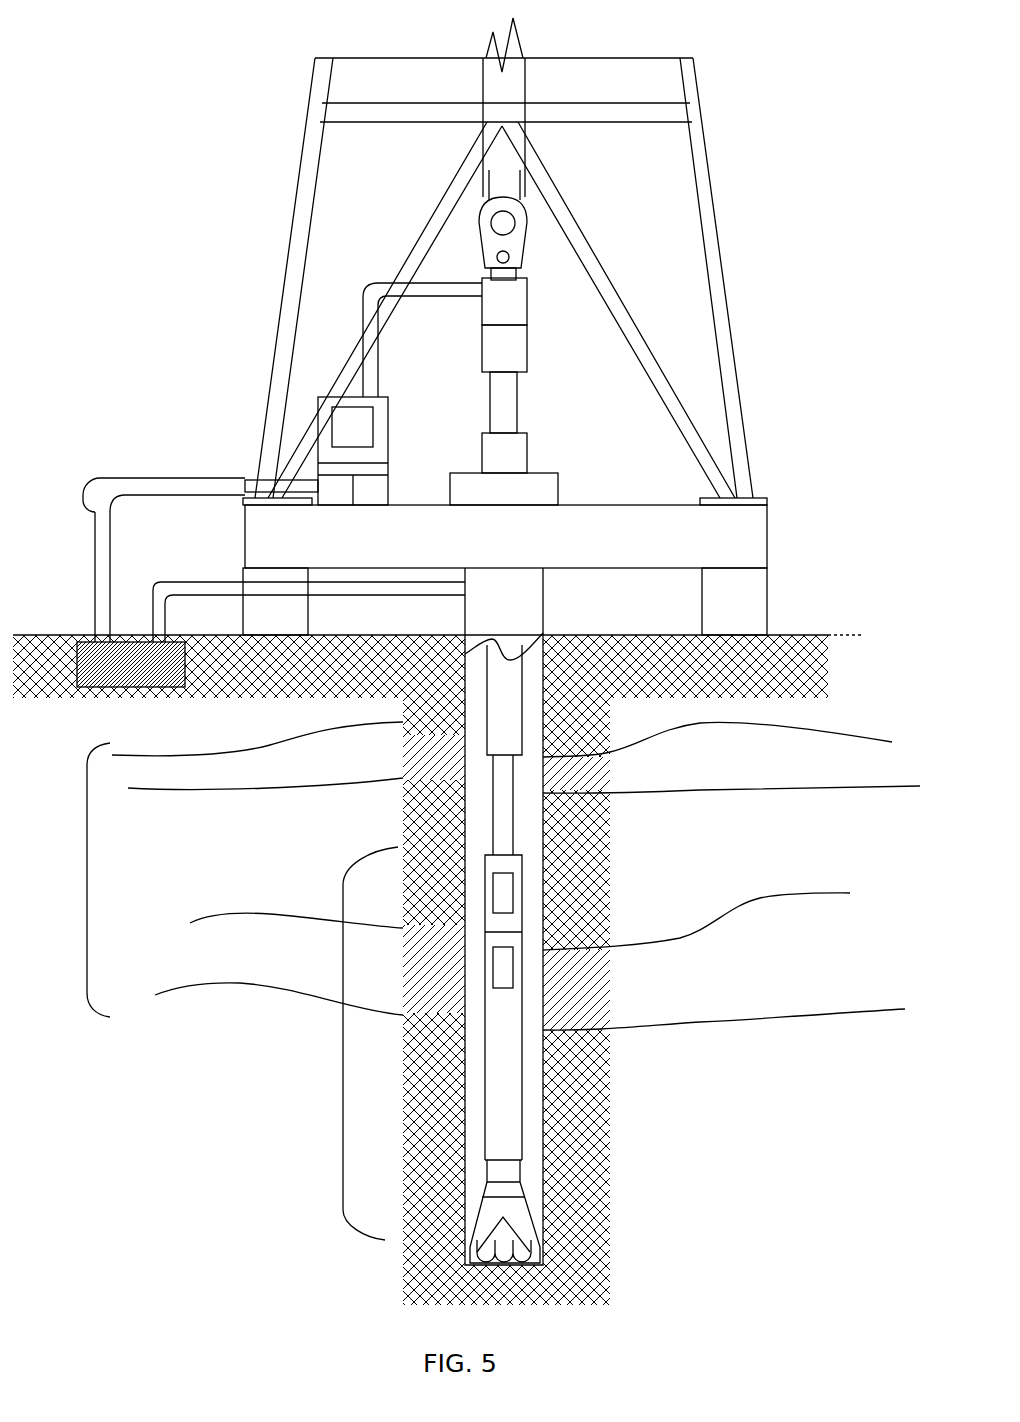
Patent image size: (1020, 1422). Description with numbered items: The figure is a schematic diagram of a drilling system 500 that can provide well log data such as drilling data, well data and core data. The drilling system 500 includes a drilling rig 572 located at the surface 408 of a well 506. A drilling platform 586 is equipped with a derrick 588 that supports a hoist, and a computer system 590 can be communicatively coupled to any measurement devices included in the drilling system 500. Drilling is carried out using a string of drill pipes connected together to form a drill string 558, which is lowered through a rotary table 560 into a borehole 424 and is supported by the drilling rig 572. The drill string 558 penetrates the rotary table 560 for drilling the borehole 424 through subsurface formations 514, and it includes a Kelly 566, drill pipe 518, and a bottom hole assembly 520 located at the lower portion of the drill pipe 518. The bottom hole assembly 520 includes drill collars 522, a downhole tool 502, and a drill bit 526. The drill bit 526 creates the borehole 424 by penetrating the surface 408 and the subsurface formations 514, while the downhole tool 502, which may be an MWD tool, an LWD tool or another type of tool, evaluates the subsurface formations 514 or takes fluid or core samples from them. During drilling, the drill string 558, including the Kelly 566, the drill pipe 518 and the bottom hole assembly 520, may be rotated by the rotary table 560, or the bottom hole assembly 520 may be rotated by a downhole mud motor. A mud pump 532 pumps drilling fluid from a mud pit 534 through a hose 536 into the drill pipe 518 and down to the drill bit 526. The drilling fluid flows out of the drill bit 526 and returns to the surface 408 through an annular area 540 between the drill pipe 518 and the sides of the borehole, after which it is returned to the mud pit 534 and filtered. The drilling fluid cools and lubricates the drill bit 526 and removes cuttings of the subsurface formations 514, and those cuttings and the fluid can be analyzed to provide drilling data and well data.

The drilling system 500 is at (210, 48).
The derrick 588 is at (712, 195).
The drilling rig 572 is at (537, 258).
The computer system 590 is at (317, 398).
The Kelly 566 is at (518, 403).
The rotary table 560 is at (558, 490).
The mud pump 532 is at (97, 478).
The hose 536 is at (207, 478).
The drilling platform 586 is at (767, 515).
The surface 408 is at (805, 633).
The well 506 is at (548, 630).
The mud pit 534 is at (140, 699).
The drill collars 522 is at (522, 713).
The drill pipe 518 is at (513, 817).
The annular area 540 is at (527, 845).
The subsurface formations 514 is at (87, 878).
The bottom hole assembly 520 is at (343, 1042).
The drill string 558 is at (525, 1088).
The borehole 424 is at (548, 1143).
The downhole tool 502 is at (508, 1146).
The drill bit 526 is at (515, 1215).